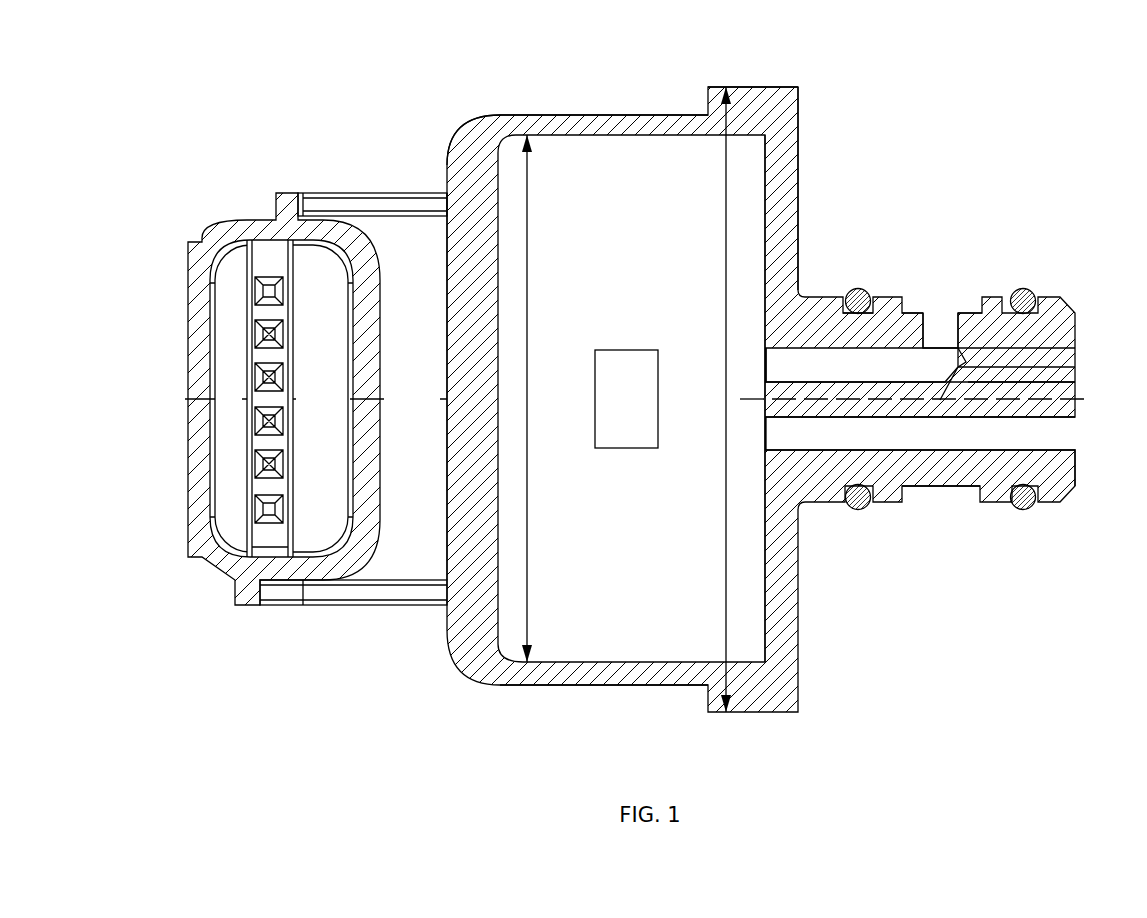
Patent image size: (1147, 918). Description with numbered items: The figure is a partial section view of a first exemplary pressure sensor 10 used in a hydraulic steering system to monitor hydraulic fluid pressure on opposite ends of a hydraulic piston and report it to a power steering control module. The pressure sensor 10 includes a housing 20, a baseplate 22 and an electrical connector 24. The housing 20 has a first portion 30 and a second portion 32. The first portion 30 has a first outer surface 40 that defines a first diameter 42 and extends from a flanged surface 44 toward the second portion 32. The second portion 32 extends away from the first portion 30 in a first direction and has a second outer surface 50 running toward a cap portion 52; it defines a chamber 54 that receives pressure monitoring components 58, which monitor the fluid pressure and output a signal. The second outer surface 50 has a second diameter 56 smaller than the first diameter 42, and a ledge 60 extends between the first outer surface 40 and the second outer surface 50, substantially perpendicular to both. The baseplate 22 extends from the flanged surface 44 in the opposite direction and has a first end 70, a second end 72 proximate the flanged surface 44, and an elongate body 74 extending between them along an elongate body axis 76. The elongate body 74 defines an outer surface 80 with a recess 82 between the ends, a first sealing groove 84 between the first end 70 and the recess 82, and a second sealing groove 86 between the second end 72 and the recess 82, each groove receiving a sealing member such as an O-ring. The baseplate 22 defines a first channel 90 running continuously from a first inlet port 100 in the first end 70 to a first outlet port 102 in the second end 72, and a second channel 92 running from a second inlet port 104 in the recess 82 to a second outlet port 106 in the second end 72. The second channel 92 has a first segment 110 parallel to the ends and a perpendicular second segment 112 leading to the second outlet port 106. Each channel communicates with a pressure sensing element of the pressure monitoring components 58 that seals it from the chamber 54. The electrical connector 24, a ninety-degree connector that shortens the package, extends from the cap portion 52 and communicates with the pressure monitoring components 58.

The pressure sensor 10 is at (930, 84).
The housing 20 is at (630, 70).
The baseplate 22 is at (1048, 270).
The electrical connector 24 is at (210, 193).
The first portion 30 is at (777, 92).
The second portion 32 is at (489, 128).
The first outer surface 40 is at (745, 87).
The first diameter 42 is at (725, 303).
The flanged surface 44 is at (800, 143).
The second outer surface 50 is at (570, 114).
The cap portion 52 is at (455, 178).
The chamber 54 is at (632, 625).
The second diameter 56 is at (532, 480).
The pressure monitoring components 58 is at (626, 399).
The ledge 60 is at (708, 89).
The first end 70 is at (1075, 323).
The second end 72 is at (766, 457).
The elongate body 74 is at (900, 513).
The elongate body axis 76 is at (1084, 399).
The outer surface 80 is at (880, 307).
The recess 82 is at (958, 312).
The first sealing groove 84 is at (1010, 310).
The second sealing groove 86 is at (847, 310).
The first channel 90 is at (1066, 430).
The second channel 92 is at (939, 307).
The first inlet port 100 is at (1077, 450).
The first outlet port 102 is at (766, 420).
The second inlet port 104 is at (930, 313).
The second outlet port 106 is at (763, 350).
The first segment 110 is at (940, 330).
The second segment 112 is at (862, 364).